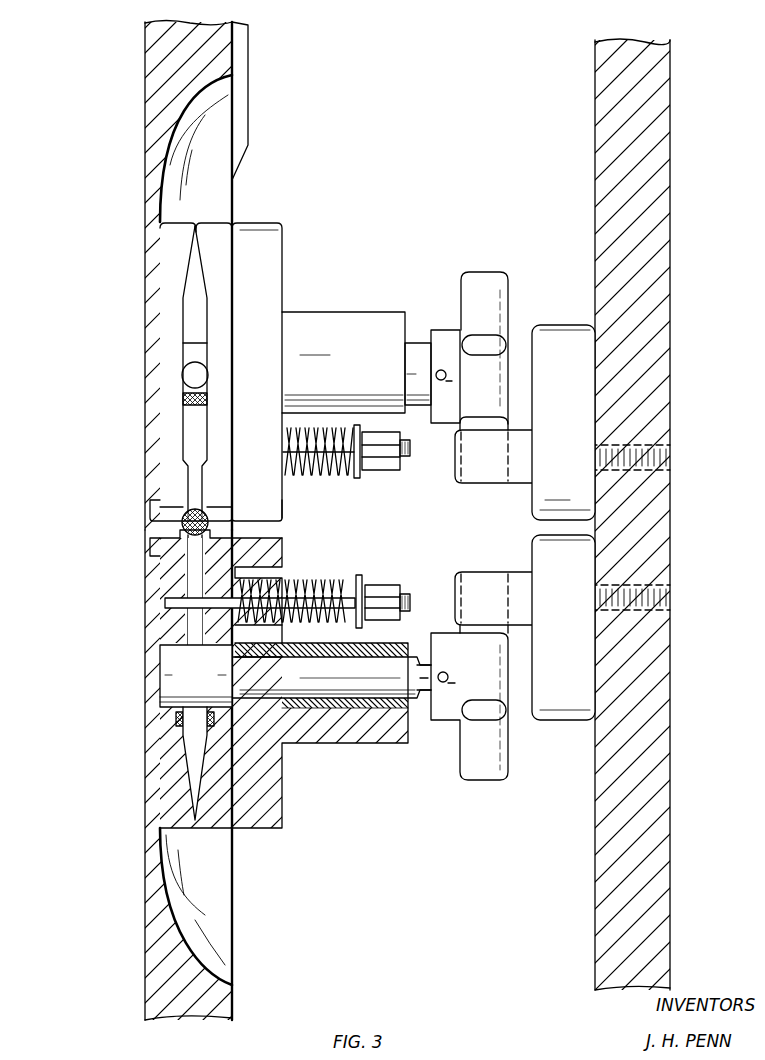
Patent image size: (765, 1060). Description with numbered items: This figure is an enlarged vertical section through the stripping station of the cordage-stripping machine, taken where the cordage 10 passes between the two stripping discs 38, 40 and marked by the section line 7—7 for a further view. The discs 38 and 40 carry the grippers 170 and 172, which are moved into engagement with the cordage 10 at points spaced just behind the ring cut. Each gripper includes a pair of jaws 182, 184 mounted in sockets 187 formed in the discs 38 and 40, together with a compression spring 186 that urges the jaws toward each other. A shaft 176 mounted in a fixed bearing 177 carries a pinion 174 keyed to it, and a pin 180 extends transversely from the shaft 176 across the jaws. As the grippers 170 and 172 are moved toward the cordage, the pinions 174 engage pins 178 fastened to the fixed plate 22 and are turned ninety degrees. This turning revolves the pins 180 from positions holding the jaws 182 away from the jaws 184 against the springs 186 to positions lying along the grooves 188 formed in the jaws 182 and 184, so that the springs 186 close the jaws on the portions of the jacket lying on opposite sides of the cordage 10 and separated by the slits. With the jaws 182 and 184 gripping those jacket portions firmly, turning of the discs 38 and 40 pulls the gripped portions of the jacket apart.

The section line 7- 7 is at (127, 65).
The stripping disc 38 is at (148, 70).
The stripping disc 40 is at (148, 948).
The socket 187 is at (160, 203).
The gripper 170 is at (277, 493).
The gripper 172 is at (244, 557).
The shaft 176 is at (205, 354).
The pin 180 is at (208, 378).
The groove 188 is at (183, 414).
The cordage 10 is at (178, 512).
The jaw 182 is at (160, 512).
The jaw 184 is at (215, 533).
The compression spring 186 is at (345, 472).
The fixed bearing 177 is at (414, 348).
The pinion 174 is at (478, 278).
The pin 178 is at (455, 485).
The fixed plate 22 is at (668, 422).